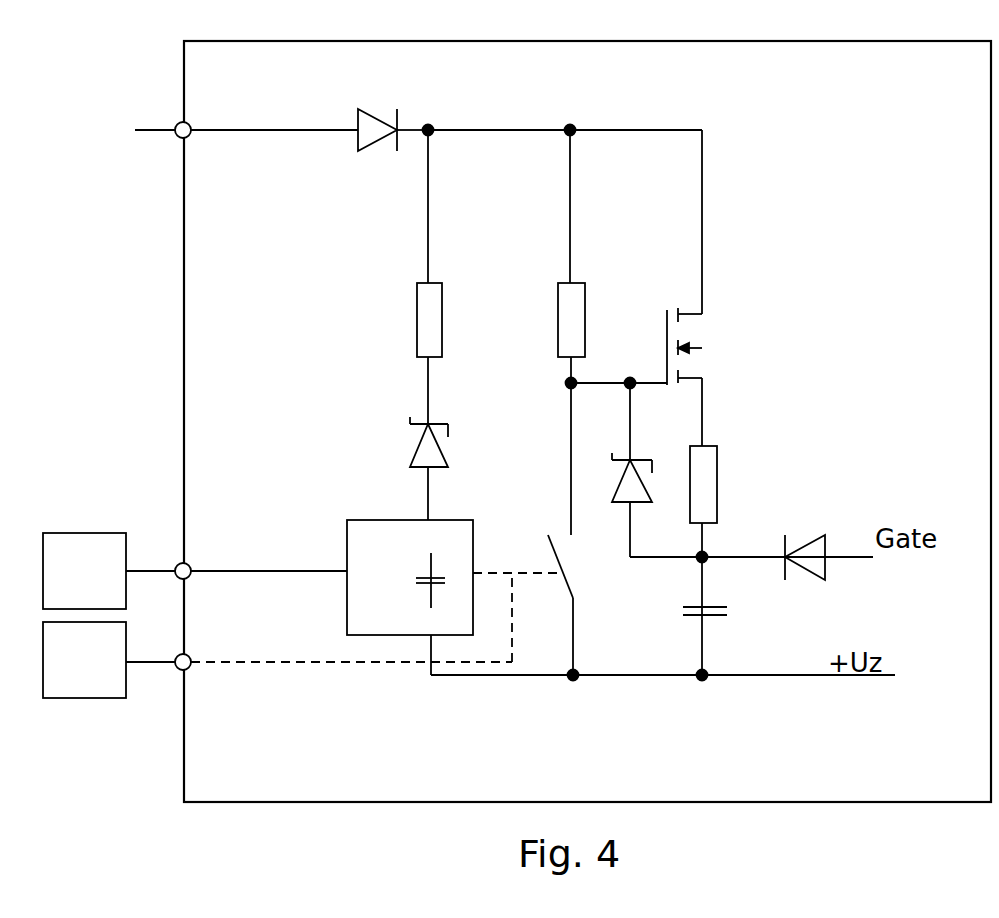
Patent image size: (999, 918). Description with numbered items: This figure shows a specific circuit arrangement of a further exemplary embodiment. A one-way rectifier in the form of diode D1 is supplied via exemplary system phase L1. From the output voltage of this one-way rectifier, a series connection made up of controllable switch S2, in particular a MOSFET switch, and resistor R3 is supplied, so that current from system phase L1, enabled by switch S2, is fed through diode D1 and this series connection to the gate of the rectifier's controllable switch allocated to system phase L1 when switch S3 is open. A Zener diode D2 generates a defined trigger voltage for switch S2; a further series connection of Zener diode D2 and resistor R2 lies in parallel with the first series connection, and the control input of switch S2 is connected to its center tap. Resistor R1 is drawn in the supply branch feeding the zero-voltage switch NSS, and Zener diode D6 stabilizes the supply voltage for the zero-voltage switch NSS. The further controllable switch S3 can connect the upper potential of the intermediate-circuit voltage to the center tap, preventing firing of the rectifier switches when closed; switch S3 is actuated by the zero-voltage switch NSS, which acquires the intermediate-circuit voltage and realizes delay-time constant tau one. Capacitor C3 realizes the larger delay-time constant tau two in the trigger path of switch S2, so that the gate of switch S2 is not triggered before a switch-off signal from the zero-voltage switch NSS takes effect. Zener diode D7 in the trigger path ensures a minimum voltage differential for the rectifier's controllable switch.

The system phase L1 is at (227, 129).
The diode D1 is at (393, 116).
The resistor R1 is at (448, 277).
The resistor R2 is at (590, 332).
The resistor R3 is at (723, 501).
The Zener diode D6 is at (454, 468).
The Zener diode D2 is at (644, 470).
The Zener diode D7 is at (817, 539).
The controllable switch S2 is at (706, 377).
The controllable switch S3 is at (579, 605).
The capacitor C3 is at (731, 616).
The zero-voltage switch NSS is at (410, 597).